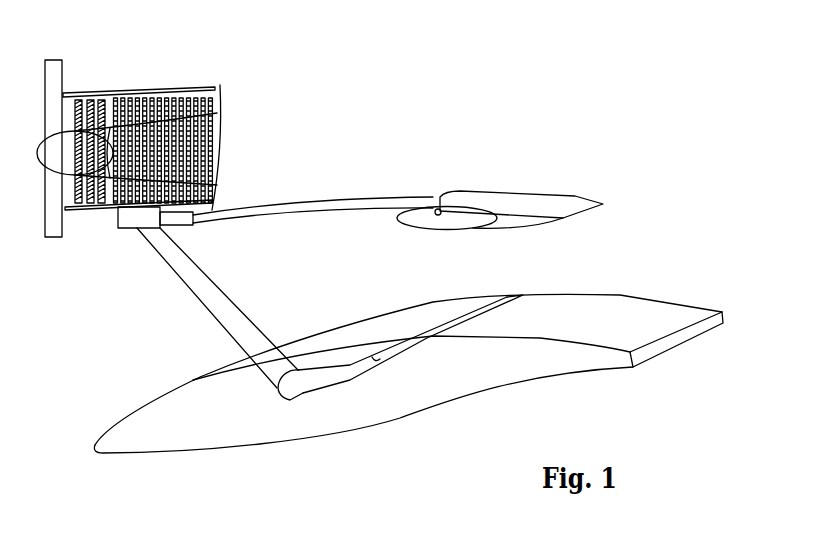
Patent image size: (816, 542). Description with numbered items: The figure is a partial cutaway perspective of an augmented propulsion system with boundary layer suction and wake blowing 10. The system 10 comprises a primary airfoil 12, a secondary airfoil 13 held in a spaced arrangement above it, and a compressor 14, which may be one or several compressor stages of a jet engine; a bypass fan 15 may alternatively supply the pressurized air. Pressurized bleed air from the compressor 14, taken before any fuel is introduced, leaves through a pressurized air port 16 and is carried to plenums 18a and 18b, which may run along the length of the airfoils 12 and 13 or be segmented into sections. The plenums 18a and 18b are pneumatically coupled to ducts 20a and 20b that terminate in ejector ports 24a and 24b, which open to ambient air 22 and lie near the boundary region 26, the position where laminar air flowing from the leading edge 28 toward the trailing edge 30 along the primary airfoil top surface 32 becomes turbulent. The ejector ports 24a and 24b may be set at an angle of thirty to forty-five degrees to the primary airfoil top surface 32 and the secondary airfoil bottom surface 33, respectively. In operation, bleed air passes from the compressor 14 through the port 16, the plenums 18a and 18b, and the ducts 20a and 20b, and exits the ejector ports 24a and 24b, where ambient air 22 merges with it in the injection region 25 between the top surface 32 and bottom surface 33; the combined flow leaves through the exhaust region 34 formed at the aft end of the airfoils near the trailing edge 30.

The augmented propulsion system with boundary layer suction and wake blowing 10 is at (568, 130).
The primary airfoil 12 is at (440, 313).
The secondary airfoil 13 is at (468, 183).
The compressor 14 is at (90, 210).
The bypass fan 15 is at (57, 53).
The pressurized air port 16 is at (163, 227).
The plenum 18a is at (297, 397).
The plenum 18b is at (470, 227).
The duct 20a is at (337, 375).
The duct 20b is at (470, 227).
The ambient air 22 is at (325, 257).
The ejector port 24a is at (435, 335).
The ejector port 24b is at (472, 228).
The injection region 25 is at (473, 253).
The boundary region 26 is at (518, 295).
The leading edge 28 is at (87, 453).
The trailing edge 30 is at (712, 345).
The primary airfoil top surface 32 is at (127, 405).
The secondary airfoil bottom surface 33 is at (527, 225).
The exhaust region 34 is at (667, 260).